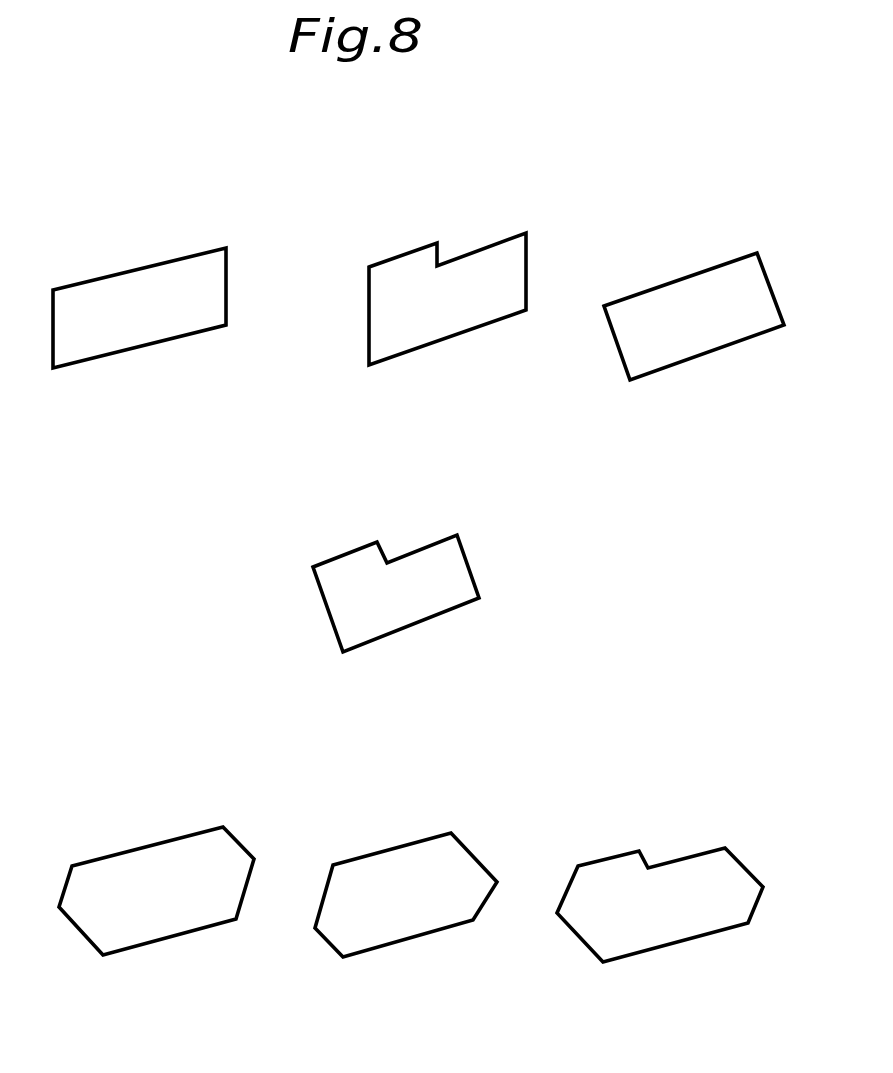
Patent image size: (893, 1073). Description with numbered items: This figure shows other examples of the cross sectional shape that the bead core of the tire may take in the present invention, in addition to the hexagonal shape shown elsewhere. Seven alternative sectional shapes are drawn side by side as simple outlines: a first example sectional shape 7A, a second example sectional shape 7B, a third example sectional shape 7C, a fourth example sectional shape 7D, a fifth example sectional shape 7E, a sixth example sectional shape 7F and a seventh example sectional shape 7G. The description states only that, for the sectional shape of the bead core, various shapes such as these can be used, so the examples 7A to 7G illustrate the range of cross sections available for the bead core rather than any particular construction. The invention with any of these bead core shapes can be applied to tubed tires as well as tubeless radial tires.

The bead core sectional shape 7A is at (177, 272).
The bead core sectional shape 7B is at (470, 275).
The bead core sectional shape 7C is at (697, 290).
The bead core sectional shape 7D is at (403, 573).
The bead core sectional shape 7E is at (157, 860).
The bead core sectional shape 7F is at (405, 867).
The bead core sectional shape 7G is at (672, 888).